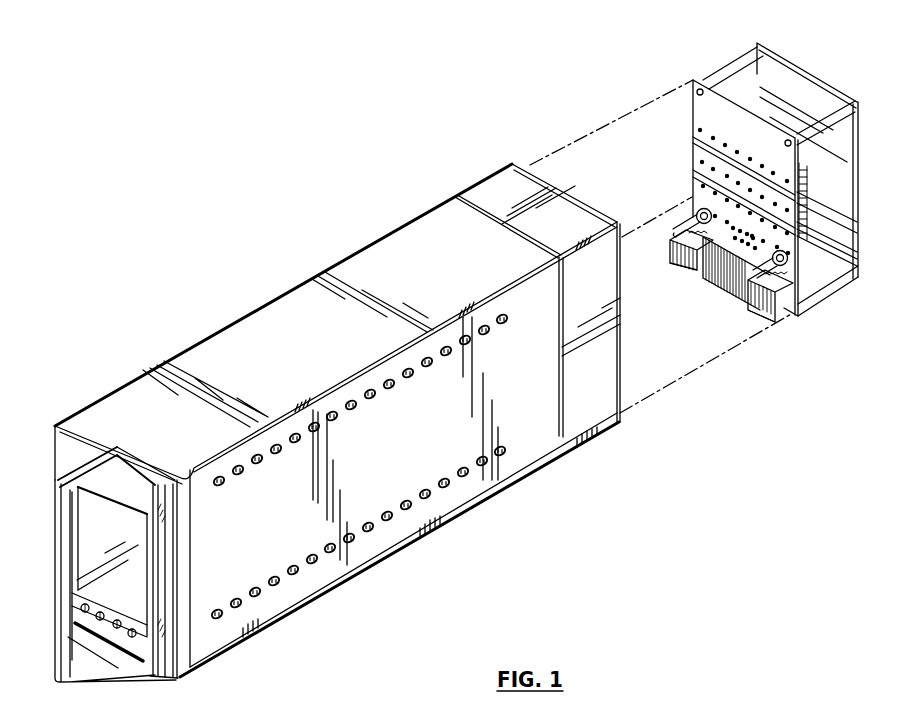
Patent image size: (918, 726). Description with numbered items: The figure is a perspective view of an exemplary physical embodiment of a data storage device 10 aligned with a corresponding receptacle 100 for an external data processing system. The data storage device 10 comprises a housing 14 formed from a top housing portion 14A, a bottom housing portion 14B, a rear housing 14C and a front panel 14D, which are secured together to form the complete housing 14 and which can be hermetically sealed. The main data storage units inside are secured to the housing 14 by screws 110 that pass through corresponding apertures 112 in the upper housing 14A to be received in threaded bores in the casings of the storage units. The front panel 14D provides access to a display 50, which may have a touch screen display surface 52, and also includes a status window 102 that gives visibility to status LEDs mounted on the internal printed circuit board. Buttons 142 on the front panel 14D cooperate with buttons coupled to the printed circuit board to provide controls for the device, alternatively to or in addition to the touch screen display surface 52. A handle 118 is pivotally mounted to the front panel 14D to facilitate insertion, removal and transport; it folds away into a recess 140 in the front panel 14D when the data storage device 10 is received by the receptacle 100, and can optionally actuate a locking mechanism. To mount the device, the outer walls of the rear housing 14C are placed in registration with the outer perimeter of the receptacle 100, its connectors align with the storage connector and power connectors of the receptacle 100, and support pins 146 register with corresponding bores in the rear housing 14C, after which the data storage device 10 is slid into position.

The data storage device 10 is at (100, 263).
The housing 14 is at (234, 313).
The top housing portion 14A is at (397, 240).
The bottom housing portion 14B is at (458, 508).
The rear housing 14C is at (590, 404).
The front panel 14D is at (65, 443).
The display 50 is at (118, 525).
The touch screen display surface 52 is at (83, 545).
The status window 102 is at (133, 662).
The screws 110 is at (505, 322).
The apertures 112 is at (500, 309).
The handle 118 is at (60, 675).
The recess 140 is at (161, 682).
The buttons 142 is at (132, 629).
The support pins 146 is at (768, 252).
The receptacle 100 is at (719, 56).